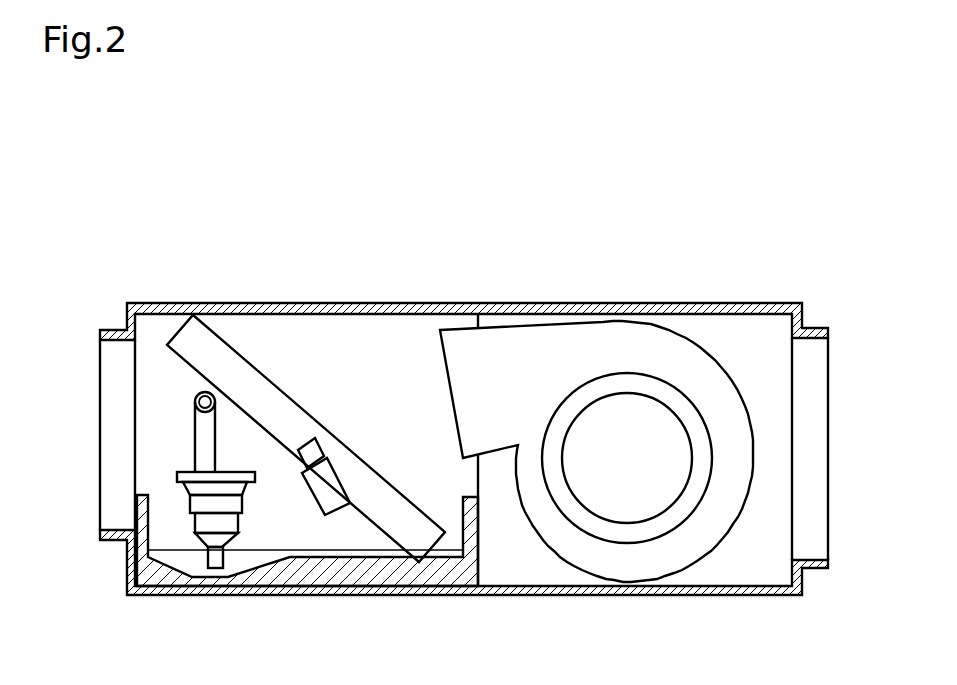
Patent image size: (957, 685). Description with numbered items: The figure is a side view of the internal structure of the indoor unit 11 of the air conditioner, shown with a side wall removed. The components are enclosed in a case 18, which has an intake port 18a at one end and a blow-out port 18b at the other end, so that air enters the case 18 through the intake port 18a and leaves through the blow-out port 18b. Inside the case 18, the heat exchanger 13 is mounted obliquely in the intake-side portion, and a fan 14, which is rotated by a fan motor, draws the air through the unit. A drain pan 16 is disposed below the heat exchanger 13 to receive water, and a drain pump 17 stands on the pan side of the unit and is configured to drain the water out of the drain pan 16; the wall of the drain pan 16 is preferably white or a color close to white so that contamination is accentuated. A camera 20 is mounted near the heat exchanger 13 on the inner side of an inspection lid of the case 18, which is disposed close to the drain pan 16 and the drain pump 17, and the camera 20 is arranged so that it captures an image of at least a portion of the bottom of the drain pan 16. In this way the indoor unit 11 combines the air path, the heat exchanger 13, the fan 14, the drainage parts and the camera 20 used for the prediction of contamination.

The indoor unit 11 is at (660, 224).
The heat exchanger 13 is at (287, 392).
The fan 14 is at (700, 340).
The drain pan 16 is at (290, 597).
The drain pump 17 is at (185, 503).
The case 18 is at (757, 303).
The intake port 18a is at (828, 506).
The blow-out port 18b is at (99, 476).
The camera 20 is at (313, 502).